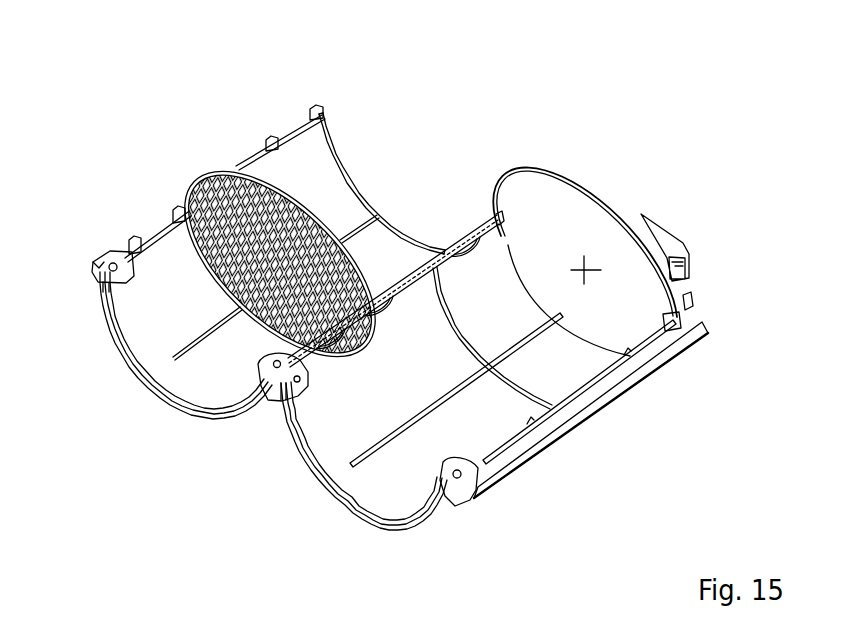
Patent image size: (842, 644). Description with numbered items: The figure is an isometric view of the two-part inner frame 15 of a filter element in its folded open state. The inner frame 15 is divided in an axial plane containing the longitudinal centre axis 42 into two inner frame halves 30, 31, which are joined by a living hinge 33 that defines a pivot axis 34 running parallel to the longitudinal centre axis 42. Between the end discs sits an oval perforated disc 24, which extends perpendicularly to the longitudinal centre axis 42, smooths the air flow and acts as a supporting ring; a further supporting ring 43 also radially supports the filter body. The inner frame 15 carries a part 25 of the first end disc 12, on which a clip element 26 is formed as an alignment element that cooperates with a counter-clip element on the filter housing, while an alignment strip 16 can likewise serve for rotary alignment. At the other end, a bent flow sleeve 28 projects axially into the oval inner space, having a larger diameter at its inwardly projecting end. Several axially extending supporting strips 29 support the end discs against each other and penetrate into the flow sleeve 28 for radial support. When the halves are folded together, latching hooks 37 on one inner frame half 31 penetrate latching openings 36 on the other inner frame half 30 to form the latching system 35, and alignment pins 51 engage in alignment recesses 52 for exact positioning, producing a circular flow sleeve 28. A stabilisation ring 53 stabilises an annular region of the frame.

The first end disc 12 is at (559, 164).
The inner frame 15 is at (616, 138).
The alignment strip 16 is at (583, 397).
The perforated disc 24 is at (197, 181).
The part of the first end disc 25 is at (611, 217).
The clip element 26 is at (668, 236).
The flow sleeve 28 is at (147, 335).
The supporting strip 29 is at (195, 332).
The inner frame half 30 is at (521, 183).
The inner frame half 31 is at (153, 229).
The living hinge 33 is at (466, 232).
The pivot axis 34 is at (214, 423).
The latching system 35 is at (311, 96).
The latching opening 36 is at (666, 317).
The latching hook 37 is at (321, 107).
The longitudinal centre axis 42 is at (574, 256).
The supporting ring 43 is at (453, 347).
The alignment pin 51 is at (108, 262).
The alignment recess 52 is at (308, 386).
The stabilisation ring 53 is at (393, 540).